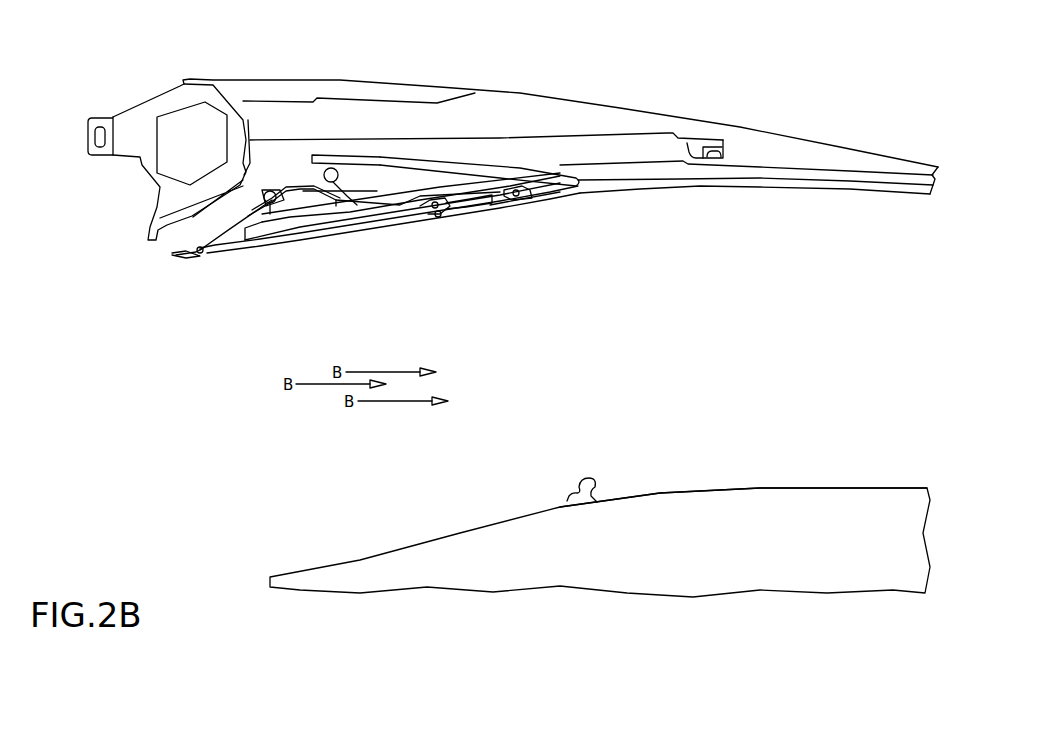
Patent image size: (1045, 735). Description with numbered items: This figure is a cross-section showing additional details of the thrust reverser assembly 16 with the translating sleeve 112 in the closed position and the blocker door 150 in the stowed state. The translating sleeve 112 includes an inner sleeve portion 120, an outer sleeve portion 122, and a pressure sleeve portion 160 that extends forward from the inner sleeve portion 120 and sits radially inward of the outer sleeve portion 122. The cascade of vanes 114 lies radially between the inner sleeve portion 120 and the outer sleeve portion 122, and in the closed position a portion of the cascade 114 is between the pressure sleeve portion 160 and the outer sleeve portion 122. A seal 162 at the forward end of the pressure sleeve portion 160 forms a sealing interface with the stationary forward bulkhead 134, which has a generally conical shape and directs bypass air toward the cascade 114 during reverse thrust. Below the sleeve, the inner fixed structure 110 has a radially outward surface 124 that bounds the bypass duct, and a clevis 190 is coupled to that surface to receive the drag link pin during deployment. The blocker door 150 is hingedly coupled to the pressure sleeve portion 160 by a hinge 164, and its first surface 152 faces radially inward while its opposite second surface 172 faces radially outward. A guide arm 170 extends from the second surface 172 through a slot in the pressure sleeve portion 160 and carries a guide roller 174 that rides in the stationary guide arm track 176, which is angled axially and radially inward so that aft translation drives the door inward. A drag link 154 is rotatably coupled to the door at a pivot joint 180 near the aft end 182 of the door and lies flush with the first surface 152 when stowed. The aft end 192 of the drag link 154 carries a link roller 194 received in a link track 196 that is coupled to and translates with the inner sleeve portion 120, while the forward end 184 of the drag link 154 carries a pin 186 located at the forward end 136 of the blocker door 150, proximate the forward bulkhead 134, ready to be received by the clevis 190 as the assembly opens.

The thrust reverser assembly 16 is at (652, 70).
The inner fixed structure 110 is at (870, 502).
The translating sleeve 112 is at (905, 148).
The cascade of vanes 114 is at (548, 132).
The inner sleeve portion 120 is at (820, 174).
The outer sleeve portion 122 is at (762, 128).
The radially outward surface 124 is at (808, 488).
The forward bulkhead 134 is at (176, 104).
The forward end of blocker door 136 is at (199, 256).
The blocker door 150 is at (257, 260).
The first surface 152 is at (386, 238).
The drag link 154 is at (348, 224).
The pressure sleeve portion 160 is at (293, 186).
The seal 162 is at (270, 190).
The hinge 164 is at (296, 218).
The guide arm 170 is at (338, 188).
The second surface 172 is at (396, 194).
The guide roller 174 is at (333, 188).
The guide arm track 176 is at (462, 170).
The pivot joint 180 is at (432, 212).
The aft end of blocker door 182 is at (441, 214).
The forward end of drag link 184 is at (200, 256).
The pin 186 is at (186, 253).
The clevis 190 is at (592, 480).
The aft end of drag link 192 is at (514, 200).
The link roller 194 is at (494, 206).
The link track 196 is at (462, 206).